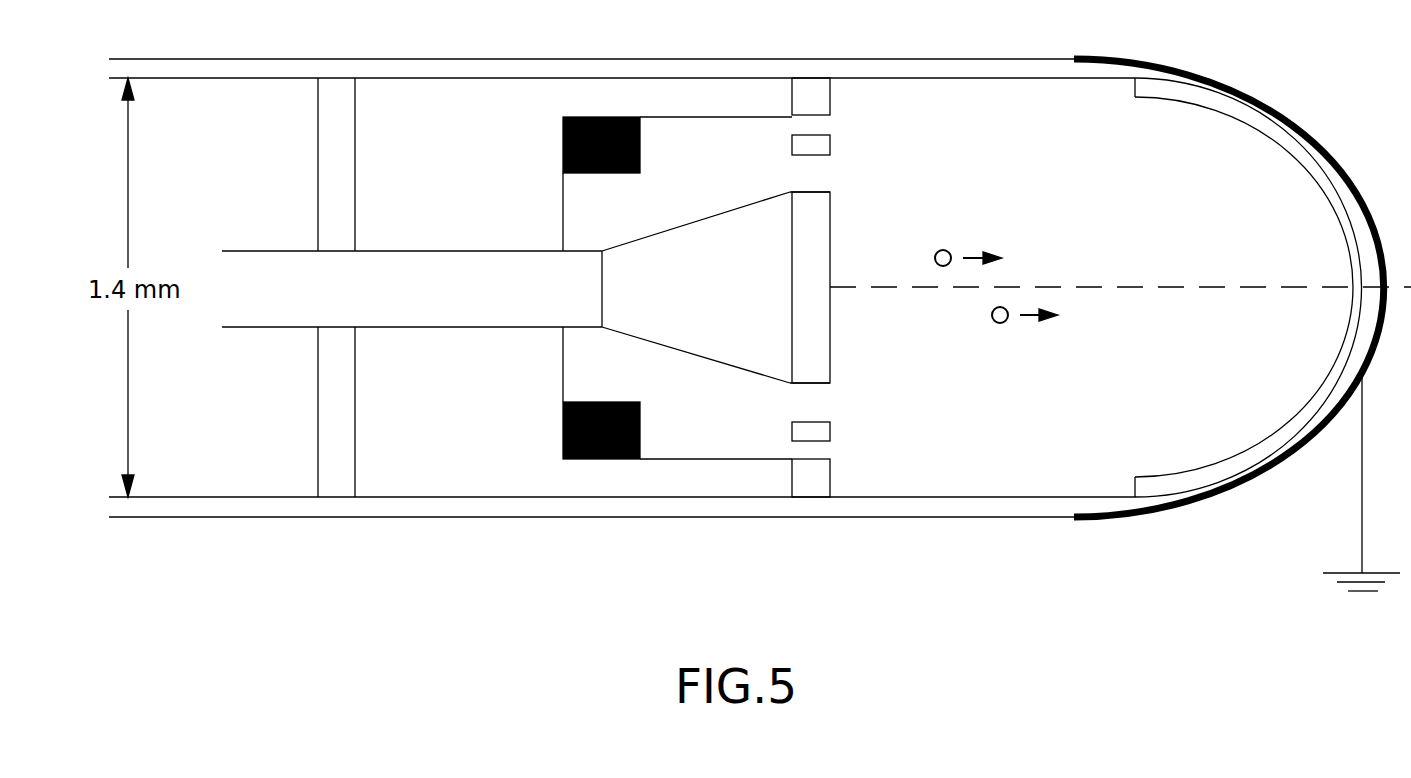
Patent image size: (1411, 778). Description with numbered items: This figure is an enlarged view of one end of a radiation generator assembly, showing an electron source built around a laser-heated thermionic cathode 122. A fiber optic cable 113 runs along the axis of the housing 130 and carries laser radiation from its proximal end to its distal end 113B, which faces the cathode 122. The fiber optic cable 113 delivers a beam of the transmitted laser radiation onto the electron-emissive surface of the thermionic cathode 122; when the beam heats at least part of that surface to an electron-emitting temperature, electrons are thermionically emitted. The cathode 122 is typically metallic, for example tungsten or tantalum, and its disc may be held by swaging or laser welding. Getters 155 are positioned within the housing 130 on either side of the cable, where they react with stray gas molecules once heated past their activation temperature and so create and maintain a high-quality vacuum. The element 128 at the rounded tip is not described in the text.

The fiber optic cable 113 is at (290, 278).
The distal end of the fiber optic cable 113B is at (517, 297).
The thermionic cathode 122 is at (830, 385).
The tip electrode 128 is at (1192, 477).
The housing 130 is at (478, 68).
The getters 155 is at (640, 167).